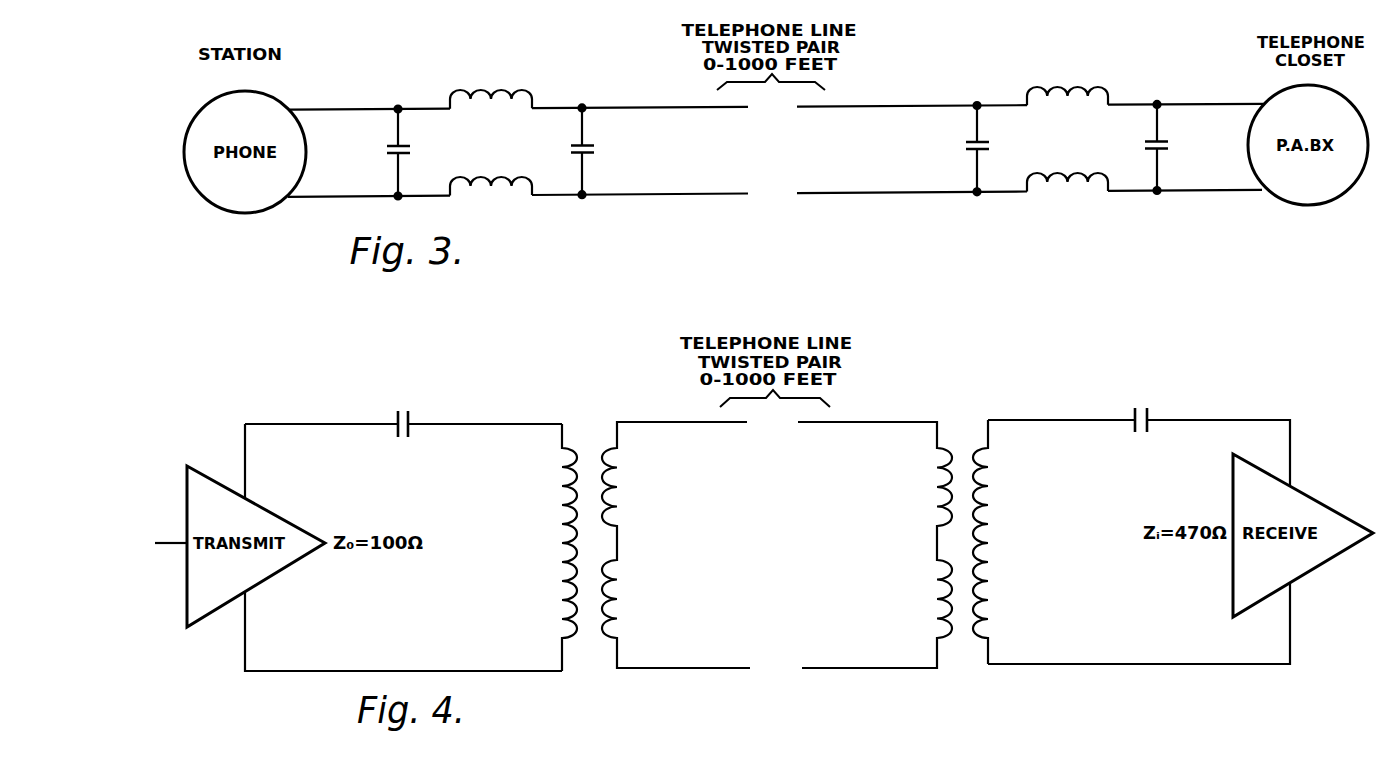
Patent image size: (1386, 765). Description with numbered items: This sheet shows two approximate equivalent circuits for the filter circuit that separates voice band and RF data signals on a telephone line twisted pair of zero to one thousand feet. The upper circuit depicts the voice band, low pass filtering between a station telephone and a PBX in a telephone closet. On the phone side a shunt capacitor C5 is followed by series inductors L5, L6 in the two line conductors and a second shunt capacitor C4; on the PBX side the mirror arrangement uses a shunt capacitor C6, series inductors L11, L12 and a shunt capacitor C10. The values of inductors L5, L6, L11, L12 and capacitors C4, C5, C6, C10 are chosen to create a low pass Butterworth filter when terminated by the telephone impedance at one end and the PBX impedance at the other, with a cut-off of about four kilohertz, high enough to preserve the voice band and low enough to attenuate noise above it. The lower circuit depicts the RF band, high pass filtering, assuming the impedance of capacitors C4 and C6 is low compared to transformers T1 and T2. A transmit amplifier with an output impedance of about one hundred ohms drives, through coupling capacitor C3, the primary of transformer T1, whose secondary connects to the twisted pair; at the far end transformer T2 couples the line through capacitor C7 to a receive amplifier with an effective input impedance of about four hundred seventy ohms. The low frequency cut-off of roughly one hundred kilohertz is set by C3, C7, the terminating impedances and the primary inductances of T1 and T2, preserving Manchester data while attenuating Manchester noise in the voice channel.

In FIG. 3, the capacitor C5 is at (413, 153).
In FIG. 3, the inductor L5 is at (491, 89).
In FIG. 3, the inductor L6 is at (491, 177).
In FIG. 3, the capacitor C4 is at (597, 151).
In FIG. 3, the capacitor C6 is at (992, 148).
In FIG. 3, the inductor L11 is at (1067, 83).
In FIG. 3, the inductor L12 is at (1067, 172).
In FIG. 3, the capacitor C10 is at (1175, 147).
In FIG. 4, the capacitor C3 is at (403, 433).
In FIG. 4, the transformer T1 is at (656, 556).
In FIG. 4, the transformer T2 is at (893, 555).
In FIG. 4, the capacitor C7 is at (1142, 427).